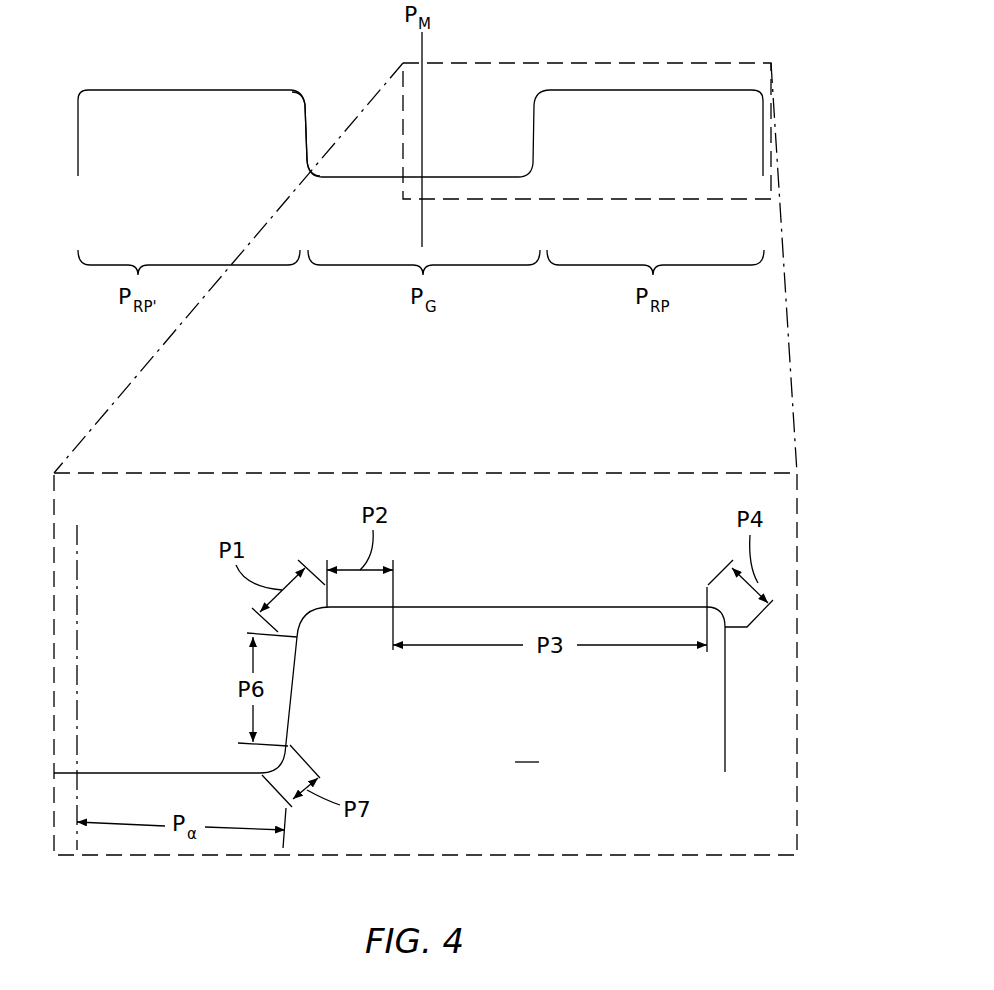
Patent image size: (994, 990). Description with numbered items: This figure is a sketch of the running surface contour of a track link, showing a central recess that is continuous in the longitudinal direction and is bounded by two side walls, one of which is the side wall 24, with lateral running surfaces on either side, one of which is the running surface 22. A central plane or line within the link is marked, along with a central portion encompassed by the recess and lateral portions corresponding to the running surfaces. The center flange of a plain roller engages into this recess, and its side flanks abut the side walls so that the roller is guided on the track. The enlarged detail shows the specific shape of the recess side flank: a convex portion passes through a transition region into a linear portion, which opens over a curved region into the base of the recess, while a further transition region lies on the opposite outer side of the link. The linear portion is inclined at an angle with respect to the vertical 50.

The running surface 22 is at (231, 88).
The side wall 24 is at (308, 126).
The vertical 50 is at (78, 543).